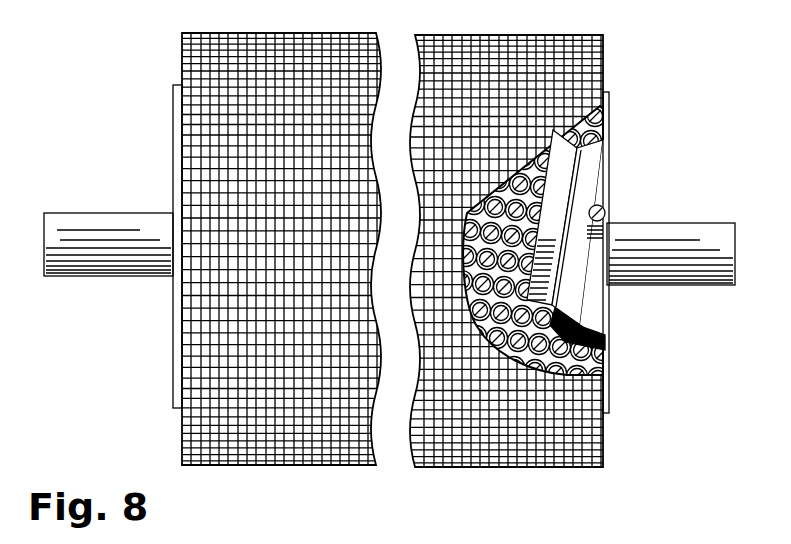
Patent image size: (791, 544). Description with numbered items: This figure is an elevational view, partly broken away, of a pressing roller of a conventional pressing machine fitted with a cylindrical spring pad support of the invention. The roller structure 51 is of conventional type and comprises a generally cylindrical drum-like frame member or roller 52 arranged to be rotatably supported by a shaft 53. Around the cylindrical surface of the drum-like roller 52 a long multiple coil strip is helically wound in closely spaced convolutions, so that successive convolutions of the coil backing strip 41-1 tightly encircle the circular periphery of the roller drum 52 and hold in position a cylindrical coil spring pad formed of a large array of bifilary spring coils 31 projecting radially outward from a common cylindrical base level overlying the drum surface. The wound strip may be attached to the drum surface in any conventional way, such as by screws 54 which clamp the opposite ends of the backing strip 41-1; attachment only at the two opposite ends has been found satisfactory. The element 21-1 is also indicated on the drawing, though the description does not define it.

The roller structure 51 is at (299, 475).
The drum-like roller 52 is at (176, 307).
The shaft 53 is at (150, 250).
The drum body 21-1 is at (601, 425).
The bifilary spring coils 31 is at (585, 168).
The coil backing strip 41-1 is at (597, 196).
The screws 54 is at (607, 215).